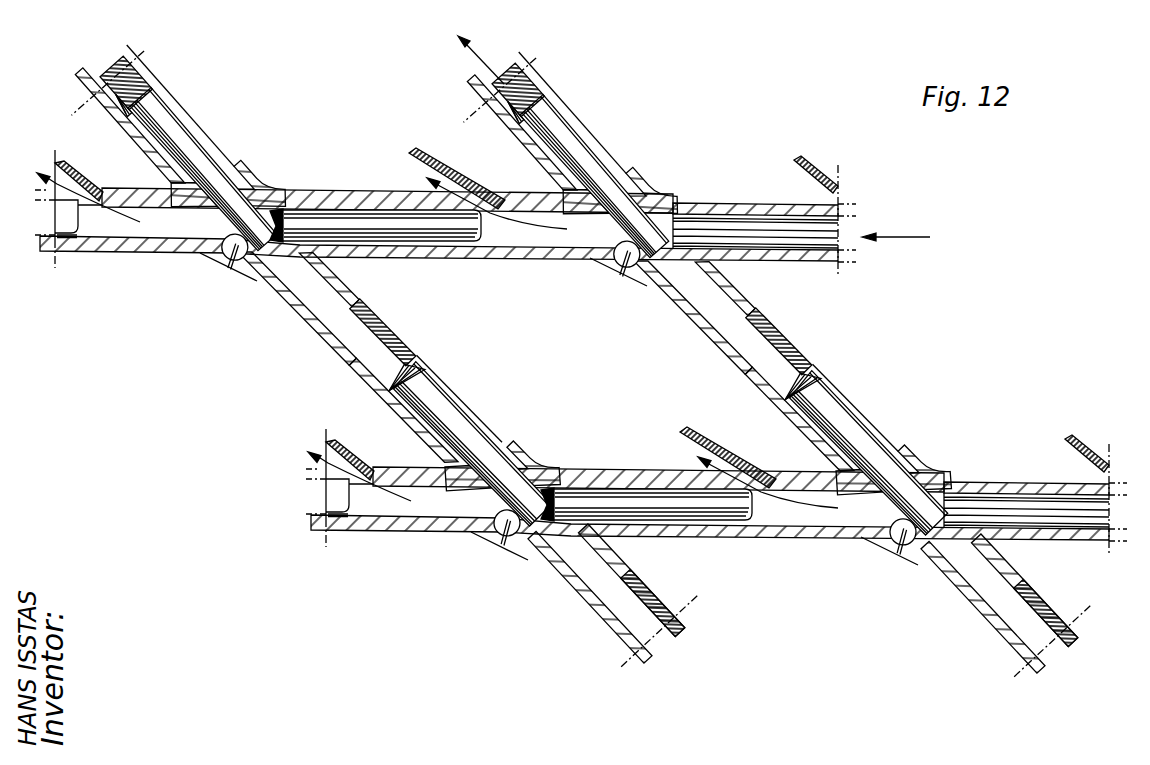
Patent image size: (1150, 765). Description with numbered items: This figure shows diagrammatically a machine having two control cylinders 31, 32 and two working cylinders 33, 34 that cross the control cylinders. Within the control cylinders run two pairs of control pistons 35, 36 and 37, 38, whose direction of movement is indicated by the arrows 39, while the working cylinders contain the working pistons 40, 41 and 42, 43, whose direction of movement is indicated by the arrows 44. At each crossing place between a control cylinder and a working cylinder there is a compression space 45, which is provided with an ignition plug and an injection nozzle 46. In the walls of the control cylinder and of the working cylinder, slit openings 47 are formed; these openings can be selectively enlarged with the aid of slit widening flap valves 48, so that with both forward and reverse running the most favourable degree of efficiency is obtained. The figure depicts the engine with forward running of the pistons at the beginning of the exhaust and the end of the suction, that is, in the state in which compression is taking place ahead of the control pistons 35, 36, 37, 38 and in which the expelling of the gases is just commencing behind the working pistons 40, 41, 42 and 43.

The control cylinder 31 is at (348, 293).
The control cylinder 32 is at (733, 294).
The working cylinder 33 is at (483, 254).
The working cylinder 34 is at (710, 530).
The control piston 35 is at (174, 142).
The control piston 36 is at (448, 418).
The control piston 37 is at (567, 140).
The control piston 38 is at (850, 437).
The arrows 39 is at (463, 58).
The working piston 40 is at (330, 220).
The working piston 41 is at (710, 227).
The working piston 42 is at (597, 495).
The working piston 43 is at (987, 507).
The arrows 44 is at (893, 238).
The compression space 45 is at (247, 262).
The injection nozzle 46 is at (230, 270).
The slit openings 47 is at (833, 398).
The slit widening flap valves 48 is at (788, 342).